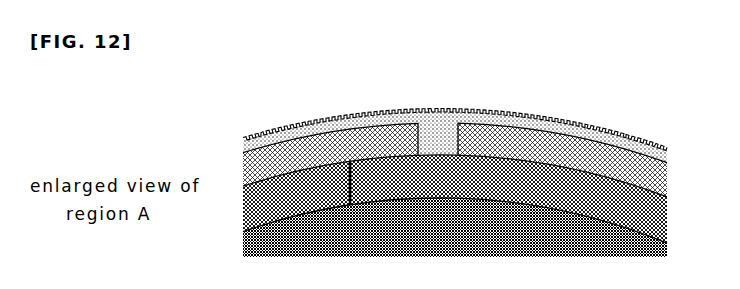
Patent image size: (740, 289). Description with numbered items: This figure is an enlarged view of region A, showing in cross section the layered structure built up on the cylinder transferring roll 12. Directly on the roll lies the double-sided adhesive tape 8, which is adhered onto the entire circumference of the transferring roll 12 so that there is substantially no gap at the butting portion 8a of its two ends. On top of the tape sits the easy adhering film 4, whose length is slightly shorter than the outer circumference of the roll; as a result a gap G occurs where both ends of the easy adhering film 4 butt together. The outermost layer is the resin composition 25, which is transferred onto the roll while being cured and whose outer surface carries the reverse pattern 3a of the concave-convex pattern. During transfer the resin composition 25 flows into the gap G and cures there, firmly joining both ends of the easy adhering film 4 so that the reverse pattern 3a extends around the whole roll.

The reverse pattern 3a is at (558, 119).
The gap G is at (460, 107).
The butting portion of double-sided adhesive tape 8a is at (346, 181).
The resin composition 25 is at (665, 158).
The easy adhering film 4 is at (660, 175).
The double-sided adhesive tape 8 is at (660, 213).
The transferring roll 12 is at (630, 251).